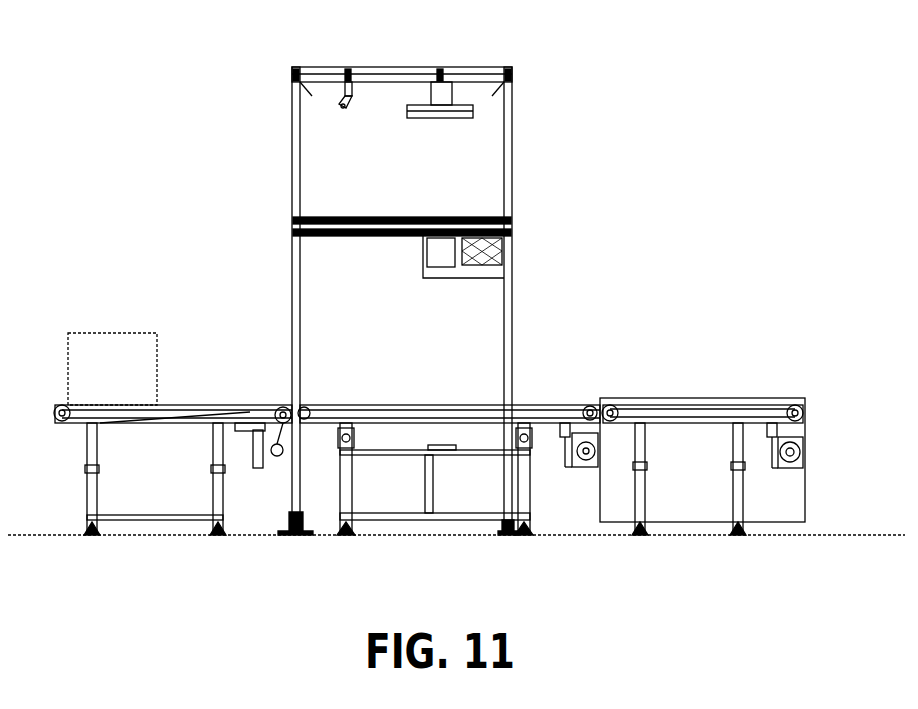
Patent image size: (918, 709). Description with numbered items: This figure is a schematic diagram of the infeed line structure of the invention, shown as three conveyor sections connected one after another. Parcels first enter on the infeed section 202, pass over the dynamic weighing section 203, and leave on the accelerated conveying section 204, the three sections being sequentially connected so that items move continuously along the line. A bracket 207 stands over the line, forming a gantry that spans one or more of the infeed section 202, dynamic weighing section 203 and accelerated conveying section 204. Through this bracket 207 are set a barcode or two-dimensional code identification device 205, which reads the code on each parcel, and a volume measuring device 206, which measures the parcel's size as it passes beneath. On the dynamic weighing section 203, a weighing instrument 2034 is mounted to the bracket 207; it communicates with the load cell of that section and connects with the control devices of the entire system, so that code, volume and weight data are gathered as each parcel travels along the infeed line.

The infeed section 202 is at (190, 392).
The dynamic weighing section 203 is at (542, 392).
The accelerated conveying section 204 is at (680, 394).
The barcode or two-dimensional code identification device 205 is at (326, 88).
The volume measuring device 206 is at (426, 84).
The bracket 207 is at (298, 250).
The weighing instrument 2034 is at (445, 279).